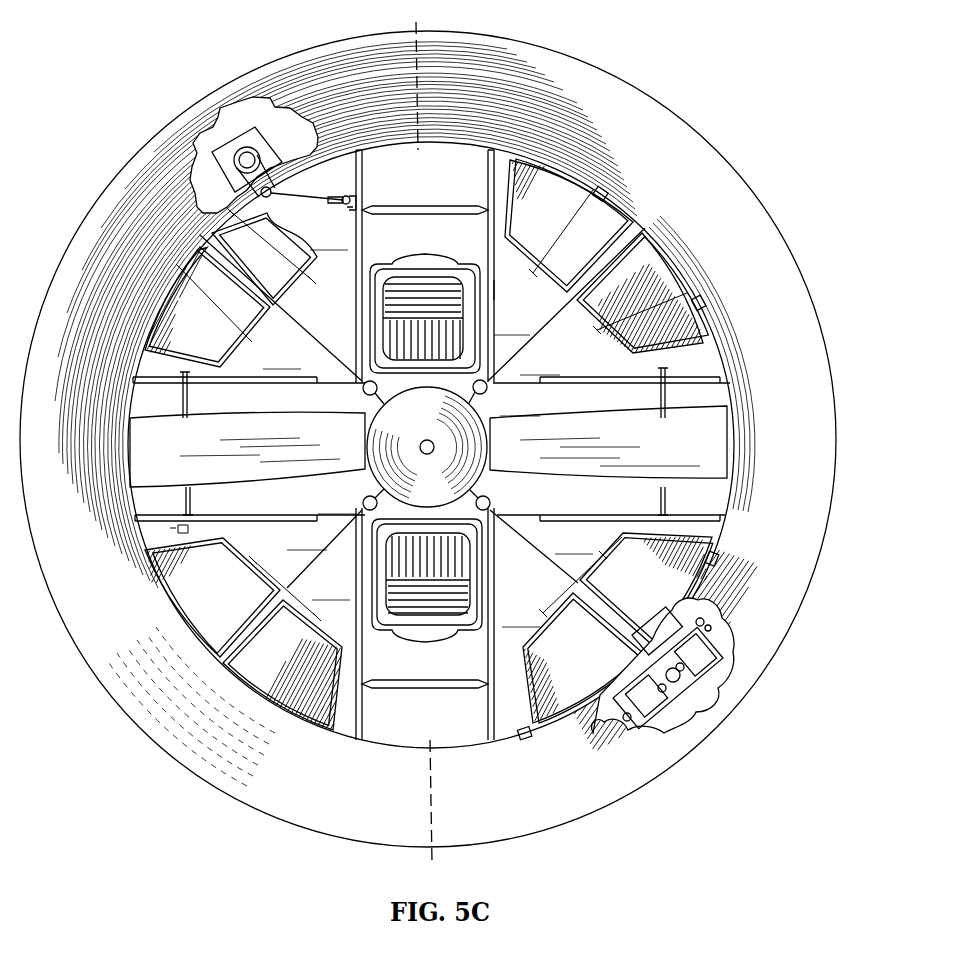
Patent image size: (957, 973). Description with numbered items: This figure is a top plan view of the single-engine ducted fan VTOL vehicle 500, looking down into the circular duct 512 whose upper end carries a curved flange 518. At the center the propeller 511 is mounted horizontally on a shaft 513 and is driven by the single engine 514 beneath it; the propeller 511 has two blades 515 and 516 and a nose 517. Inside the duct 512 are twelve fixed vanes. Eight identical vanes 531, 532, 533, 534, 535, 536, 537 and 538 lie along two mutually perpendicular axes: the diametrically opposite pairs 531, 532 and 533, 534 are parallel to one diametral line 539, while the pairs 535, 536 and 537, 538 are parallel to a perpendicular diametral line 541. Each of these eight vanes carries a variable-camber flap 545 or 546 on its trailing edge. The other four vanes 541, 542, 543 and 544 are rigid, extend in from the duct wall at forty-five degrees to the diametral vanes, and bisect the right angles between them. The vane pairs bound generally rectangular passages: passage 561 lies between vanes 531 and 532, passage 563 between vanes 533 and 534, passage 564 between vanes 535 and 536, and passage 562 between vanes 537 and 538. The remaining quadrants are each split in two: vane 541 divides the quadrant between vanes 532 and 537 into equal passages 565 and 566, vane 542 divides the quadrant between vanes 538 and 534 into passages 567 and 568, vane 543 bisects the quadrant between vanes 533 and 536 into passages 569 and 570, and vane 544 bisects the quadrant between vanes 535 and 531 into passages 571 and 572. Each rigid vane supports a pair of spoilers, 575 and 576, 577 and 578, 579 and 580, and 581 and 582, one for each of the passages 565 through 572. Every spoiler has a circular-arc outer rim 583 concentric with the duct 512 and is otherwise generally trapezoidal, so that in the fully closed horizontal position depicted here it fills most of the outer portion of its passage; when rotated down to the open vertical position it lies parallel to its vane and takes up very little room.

The single-engine ducted fan VTOL vehicle 500 is at (139, 112).
The propeller 511 is at (369, 413).
The duct 512 is at (732, 352).
The shaft 513 is at (420, 447).
The engine 514 is at (444, 260).
The blade 515 is at (203, 457).
The blade 516 is at (677, 450).
The nose 517 is at (446, 422).
The curved flange 518 is at (612, 83).
The vane 531 is at (355, 187).
The vane 532 is at (488, 188).
The vane 533 is at (363, 730).
The vane 534 is at (494, 730).
The vane 535 is at (268, 384).
The vane 536 is at (210, 520).
The vane 537 is at (597, 376).
The vane 538 is at (547, 512).
The diametral line 539 is at (416, 25).
The vane 541 is at (558, 322).
The vane 542 is at (560, 577).
The vane 543 is at (293, 580).
The vane 544 is at (293, 318).
The variable-camber flap 545 is at (494, 291).
The variable-camber flap 546 is at (365, 161).
The rectangular duct segment or passage 561 is at (406, 247).
The rectangular passage 562 is at (537, 413).
The rectangular passage 563 is at (458, 714).
The rectangular passage 564 is at (356, 511).
The passage 565 is at (536, 332).
The passage 566 is at (565, 372).
The passage 567 is at (593, 551).
The passage 568 is at (540, 624).
The passage 569 is at (350, 597).
The passage 570 is at (325, 547).
The passage 571 is at (301, 366).
The passage 572 is at (348, 247).
The spoiler 575 is at (583, 246).
The spoiler 576 is at (655, 277).
The spoiler 577 is at (681, 607).
The spoiler 578 is at (598, 669).
The spoiler 579 is at (264, 684).
The spoiler 580 is at (216, 589).
The spoiler 581 is at (246, 312).
The spoiler 582 is at (290, 272).
The circular-arc outer rim 583 is at (597, 191).